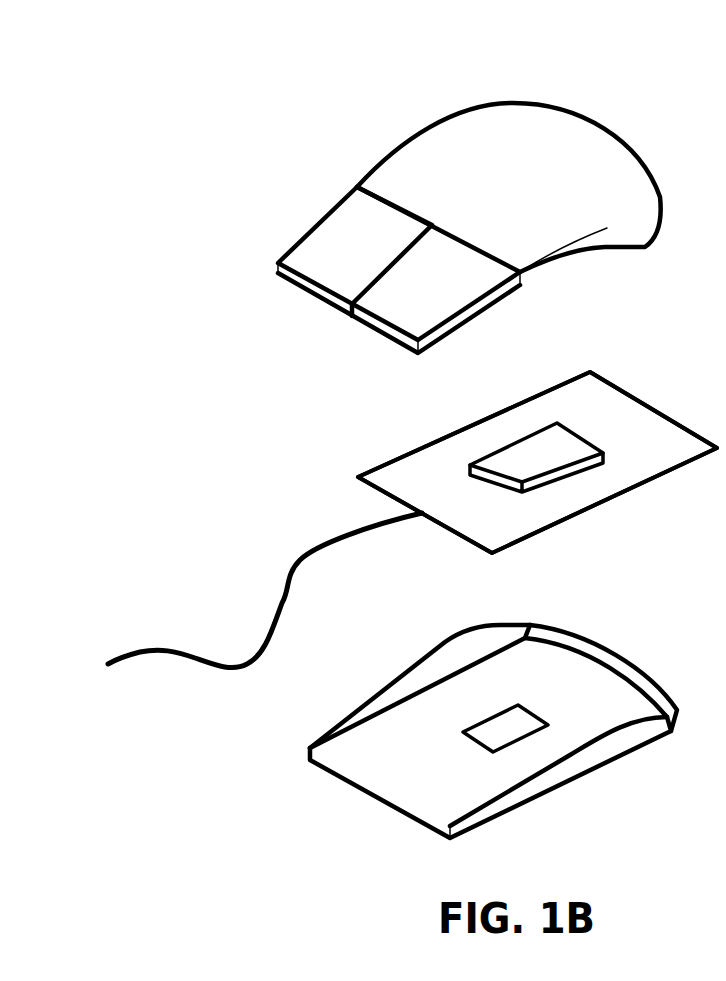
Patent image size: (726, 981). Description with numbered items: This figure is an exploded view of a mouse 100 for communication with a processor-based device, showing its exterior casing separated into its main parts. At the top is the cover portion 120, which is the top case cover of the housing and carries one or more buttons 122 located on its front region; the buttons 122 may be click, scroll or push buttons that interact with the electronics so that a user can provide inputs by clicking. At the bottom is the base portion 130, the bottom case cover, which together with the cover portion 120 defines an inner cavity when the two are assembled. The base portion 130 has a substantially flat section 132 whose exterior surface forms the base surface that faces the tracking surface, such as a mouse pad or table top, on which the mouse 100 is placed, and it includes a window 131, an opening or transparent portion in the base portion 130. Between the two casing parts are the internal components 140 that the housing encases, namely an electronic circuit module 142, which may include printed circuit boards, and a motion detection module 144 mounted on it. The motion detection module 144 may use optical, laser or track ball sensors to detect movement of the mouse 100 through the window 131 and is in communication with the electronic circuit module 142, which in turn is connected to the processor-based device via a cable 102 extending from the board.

The mouse 100 is at (653, 72).
The cable 102 is at (172, 652).
The cover portion 120 is at (453, 165).
The buttons 122 is at (357, 225).
The base portion 130 is at (485, 709).
The window 131 is at (473, 744).
The substantially flat section 132 is at (580, 680).
The internal components 140 is at (358, 477).
The electronic circuit module 142 is at (630, 413).
The motion detection module 144 is at (527, 458).